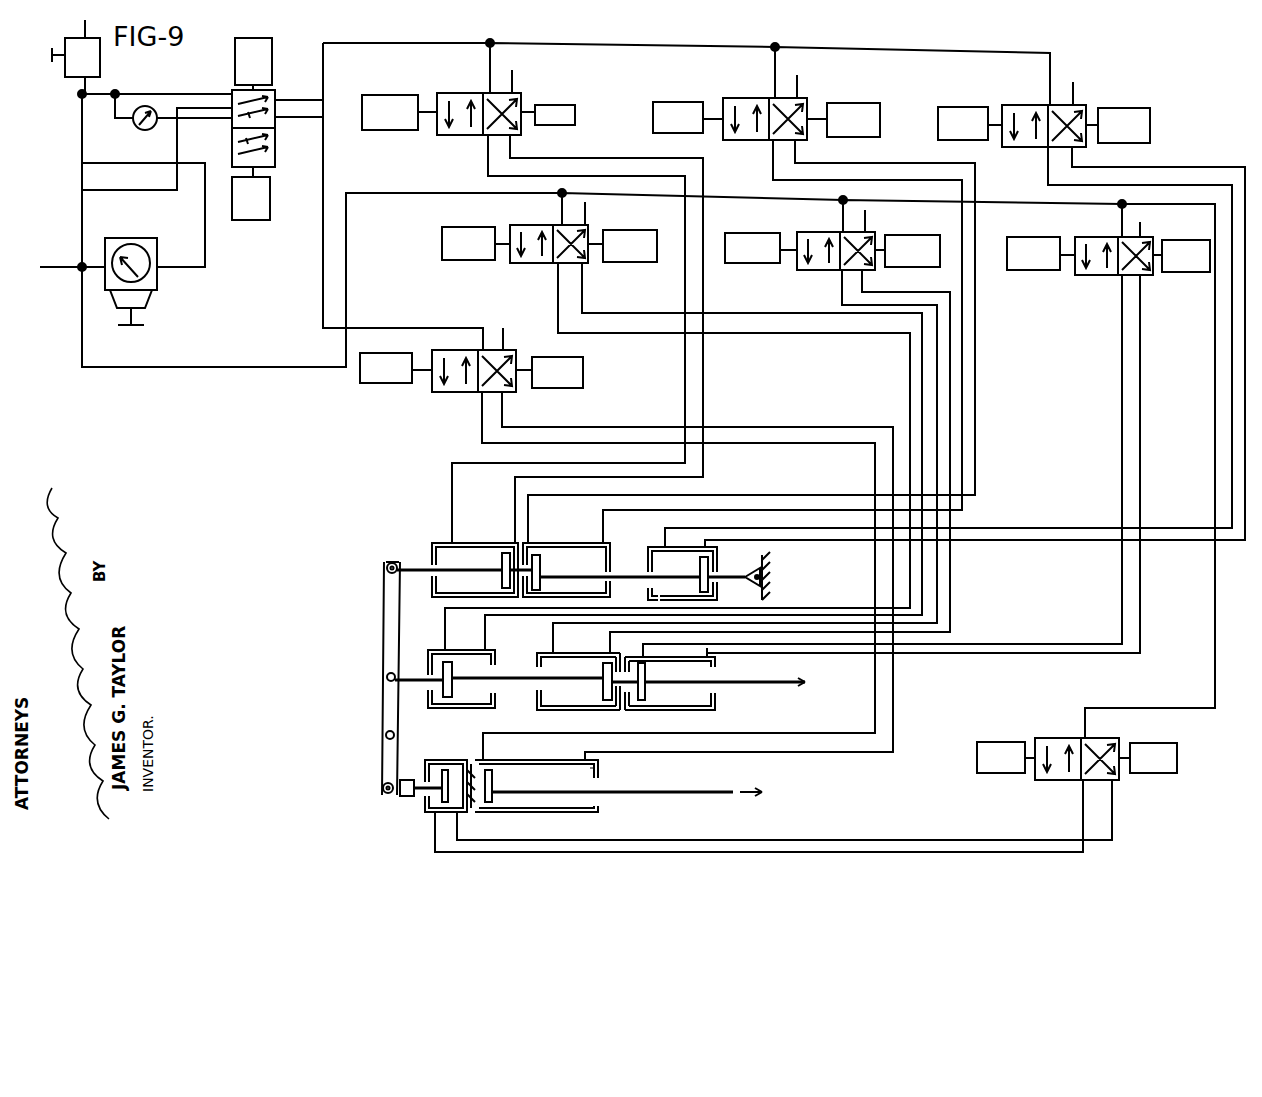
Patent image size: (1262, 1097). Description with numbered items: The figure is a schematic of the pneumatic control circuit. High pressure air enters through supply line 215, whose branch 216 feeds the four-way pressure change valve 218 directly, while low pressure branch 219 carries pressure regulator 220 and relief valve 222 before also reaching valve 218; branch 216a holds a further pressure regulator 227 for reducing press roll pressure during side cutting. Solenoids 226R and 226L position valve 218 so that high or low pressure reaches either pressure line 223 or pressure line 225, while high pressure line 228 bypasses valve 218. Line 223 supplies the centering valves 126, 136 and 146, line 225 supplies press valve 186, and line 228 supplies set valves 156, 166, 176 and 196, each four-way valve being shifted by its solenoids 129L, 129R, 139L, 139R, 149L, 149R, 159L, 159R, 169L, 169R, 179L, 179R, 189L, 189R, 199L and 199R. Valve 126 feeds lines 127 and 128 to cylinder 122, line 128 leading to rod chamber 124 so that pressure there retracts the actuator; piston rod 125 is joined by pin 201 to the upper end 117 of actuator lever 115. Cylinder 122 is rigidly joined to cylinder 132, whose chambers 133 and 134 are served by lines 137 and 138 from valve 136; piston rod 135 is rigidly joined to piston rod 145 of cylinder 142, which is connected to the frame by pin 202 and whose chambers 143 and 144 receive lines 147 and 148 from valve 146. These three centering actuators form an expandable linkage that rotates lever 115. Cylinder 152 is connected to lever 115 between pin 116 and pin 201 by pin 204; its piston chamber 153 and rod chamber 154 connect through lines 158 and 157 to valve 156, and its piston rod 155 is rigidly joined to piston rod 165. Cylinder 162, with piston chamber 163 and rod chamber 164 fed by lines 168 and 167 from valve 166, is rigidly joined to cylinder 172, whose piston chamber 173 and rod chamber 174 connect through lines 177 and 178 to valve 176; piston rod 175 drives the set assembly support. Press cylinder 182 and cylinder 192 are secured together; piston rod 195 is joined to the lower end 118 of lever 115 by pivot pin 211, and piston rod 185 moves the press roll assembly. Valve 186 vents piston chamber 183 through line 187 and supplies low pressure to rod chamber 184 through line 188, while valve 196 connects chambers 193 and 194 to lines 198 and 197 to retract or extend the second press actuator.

The actuator lever 115 is at (383, 640).
The pin 116 is at (386, 735).
The upper end of actuator lever 117 is at (387, 568).
The lower end of actuator lever 118 is at (383, 792).
The cylinder 122 is at (467, 543).
The rod chamber 124 is at (435, 553).
The piston rod 125 is at (448, 597).
The four-way valve 126 is at (460, 95).
The line 127 is at (512, 490).
The line 128 is at (450, 478).
The left solenoid 129L is at (389, 100).
The right solenoid 129R is at (562, 105).
The cylinder 132 is at (605, 545).
The chamber 133 is at (548, 540).
The chamber 134 is at (613, 553).
The piston rod 135 is at (603, 567).
The four-way valve 136 is at (752, 98).
The line 137 is at (805, 496).
The line 138 is at (962, 503).
The left solenoid 139L is at (680, 106).
The right solenoid 139R is at (851, 110).
The cylinder 142 is at (680, 545).
The piston chamber 143 is at (719, 557).
The chamber 144 is at (650, 594).
The piston rod 145 is at (700, 575).
The four-way valve 146 is at (1025, 147).
The line 147 is at (1075, 543).
The line 148 is at (1071, 526).
The left solenoid 149L is at (968, 113).
The right solenoid 149R is at (1135, 115).
The cylinder 152 is at (440, 710).
The piston chamber 153 is at (440, 688).
The rod chamber 154 is at (476, 655).
The piston rod 155 is at (527, 692).
The four-way valve 156 is at (538, 225).
The line 157 is at (910, 404).
The line 158 is at (922, 374).
The left solenoid 159L is at (463, 261).
The right solenoid 159R is at (636, 262).
The cylinder 162 is at (600, 715).
The piston chamber 163 is at (613, 710).
The rod chamber 164 is at (537, 660).
The piston rod 165 is at (593, 688).
The four-way valve 166 is at (826, 232).
The line 167 is at (945, 293).
The line 168 is at (842, 304).
The left solenoid 169L is at (750, 265).
The right solenoid 169R is at (918, 235).
The cylinder 172 is at (685, 710).
The piston chamber 173 is at (644, 700).
The rod chamber 174 is at (717, 672).
The piston rod 175 is at (648, 680).
The four-way valve 176 is at (1089, 230).
The line 177 is at (1115, 604).
The line 178 is at (1140, 598).
The left solenoid 179L is at (1021, 271).
The right solenoid 179R is at (1185, 272).
The cylinder 182 is at (583, 815).
The piston chamber 183 is at (497, 800).
The rod chamber 184 is at (582, 780).
The piston rod 185 is at (610, 792).
The four-way valve 186 is at (448, 392).
The line 187 is at (875, 678).
The line 188 is at (893, 712).
The left solenoid 189L is at (380, 384).
The right solenoid 189R is at (557, 388).
The cylinder 192 is at (430, 810).
The chamber 193 is at (432, 813).
The chamber 194 is at (460, 798).
The piston rod 195 is at (420, 778).
The four-way valve 196 is at (1056, 738).
The line 197 is at (1022, 847).
The line 198 is at (950, 840).
The left solenoid 199L is at (998, 774).
The right solenoid 199R is at (1149, 774).
The pin 201 is at (391, 562).
The pin 202 is at (766, 586).
The pin 204 is at (386, 678).
The pivot pin 211 is at (385, 783).
The supply line 215 is at (52, 272).
The branch 216 is at (82, 222).
The branch 216a is at (157, 125).
The four-way pressure change valve 218 is at (275, 152).
The low pressure branch 219 is at (207, 252).
The pressure regulator 220 is at (150, 292).
The relief valve 222 is at (68, 80).
The pressure line 223 is at (342, 43).
The pressure line 225 is at (320, 305).
The left solenoid 226L is at (268, 72).
The right solenoid 226R is at (276, 203).
The pressure regulator 227 is at (147, 106).
The high pressure line 228 is at (140, 368).